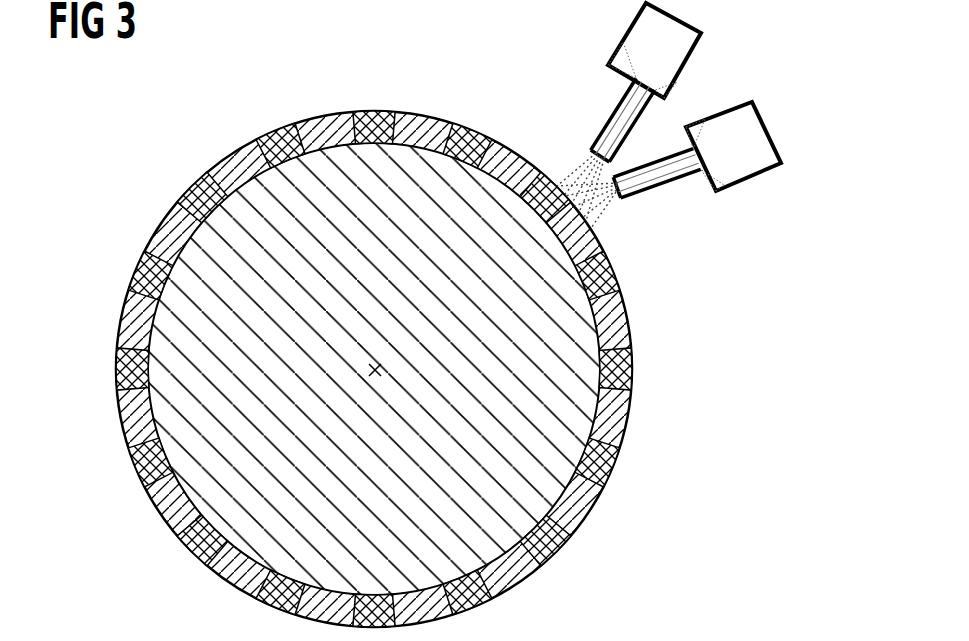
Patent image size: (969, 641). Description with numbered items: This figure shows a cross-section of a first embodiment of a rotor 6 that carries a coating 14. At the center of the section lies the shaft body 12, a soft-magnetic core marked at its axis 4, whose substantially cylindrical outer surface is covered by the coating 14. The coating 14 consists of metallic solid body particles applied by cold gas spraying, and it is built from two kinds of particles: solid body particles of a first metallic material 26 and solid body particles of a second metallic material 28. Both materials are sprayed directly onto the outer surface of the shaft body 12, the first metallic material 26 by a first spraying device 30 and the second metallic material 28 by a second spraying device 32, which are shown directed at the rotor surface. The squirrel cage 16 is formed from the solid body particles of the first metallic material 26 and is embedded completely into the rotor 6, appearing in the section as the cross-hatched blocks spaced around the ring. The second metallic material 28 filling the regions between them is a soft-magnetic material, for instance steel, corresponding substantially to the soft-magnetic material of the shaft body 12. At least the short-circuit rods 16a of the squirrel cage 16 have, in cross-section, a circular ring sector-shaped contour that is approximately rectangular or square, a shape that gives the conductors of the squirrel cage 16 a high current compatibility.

The axis of rotation 4 is at (370, 364).
The rotor 6 is at (506, 578).
The shaft body 12 is at (572, 414).
The coating 14 is at (631, 366).
The squirrel cage 16 is at (137, 272).
The short-circuit rods 16a is at (137, 462).
The first metallic material 26 is at (578, 172).
The second metallic material 28 is at (607, 200).
The first spraying device 30 is at (702, 40).
The second spraying device 32 is at (775, 130).